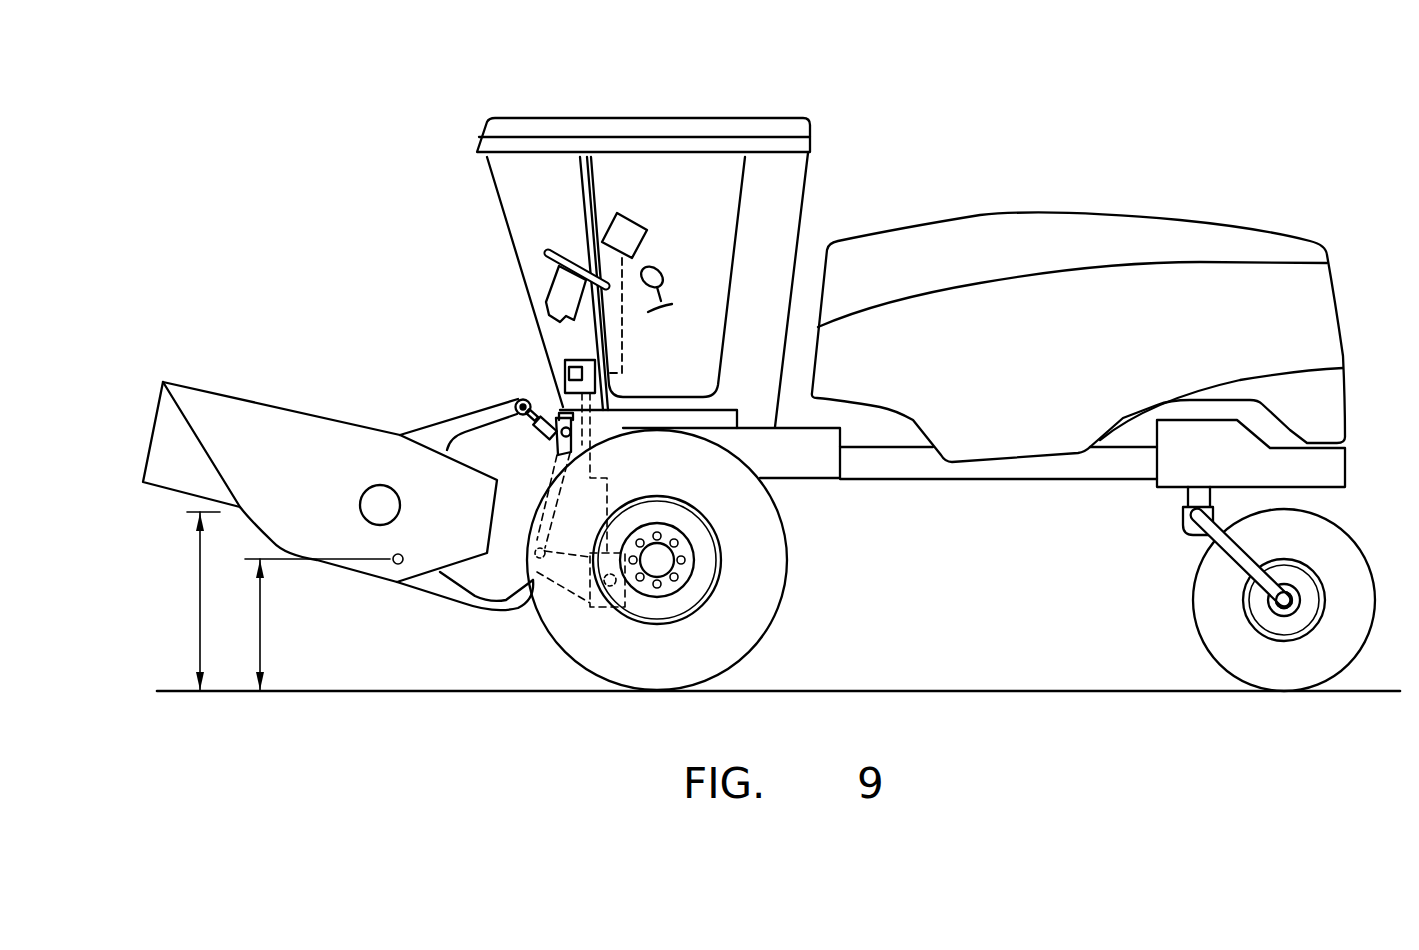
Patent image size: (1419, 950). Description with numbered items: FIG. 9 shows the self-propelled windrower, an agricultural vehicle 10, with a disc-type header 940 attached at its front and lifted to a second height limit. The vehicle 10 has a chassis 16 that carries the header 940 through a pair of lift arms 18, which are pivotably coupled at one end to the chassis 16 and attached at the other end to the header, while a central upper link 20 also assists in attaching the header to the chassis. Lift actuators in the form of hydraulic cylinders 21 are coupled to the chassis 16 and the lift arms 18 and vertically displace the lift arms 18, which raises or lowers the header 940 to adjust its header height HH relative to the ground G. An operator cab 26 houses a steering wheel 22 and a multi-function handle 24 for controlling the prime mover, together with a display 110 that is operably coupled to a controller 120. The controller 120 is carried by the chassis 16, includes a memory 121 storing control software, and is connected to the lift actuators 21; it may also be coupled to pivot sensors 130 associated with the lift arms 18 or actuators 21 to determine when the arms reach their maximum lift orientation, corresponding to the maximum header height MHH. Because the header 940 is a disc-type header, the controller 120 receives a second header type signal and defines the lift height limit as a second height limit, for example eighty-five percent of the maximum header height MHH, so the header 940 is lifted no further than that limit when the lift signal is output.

The agricultural vehicle 10 is at (759, 374).
The chassis 16 is at (1043, 480).
The lift arms 18 is at (471, 603).
The central upper link 20 is at (542, 430).
The hydraulic cylinders 21 is at (552, 468).
The steering wheel 22 is at (565, 253).
The multi-function handle 24 is at (662, 270).
The operator cab 26 is at (588, 118).
The display 110 is at (628, 213).
The controller 120 is at (568, 357).
The memory 121 is at (570, 373).
The pivot sensors 130 is at (590, 607).
The disc-type header 940 is at (345, 405).
The ground G is at (387, 692).
The header height HH is at (260, 625).
The maximum header height MHH is at (197, 602).